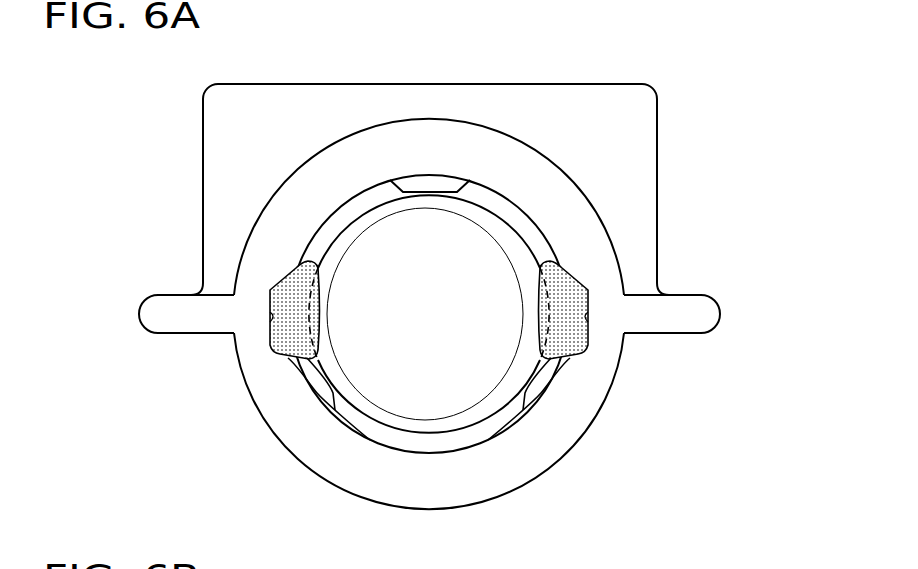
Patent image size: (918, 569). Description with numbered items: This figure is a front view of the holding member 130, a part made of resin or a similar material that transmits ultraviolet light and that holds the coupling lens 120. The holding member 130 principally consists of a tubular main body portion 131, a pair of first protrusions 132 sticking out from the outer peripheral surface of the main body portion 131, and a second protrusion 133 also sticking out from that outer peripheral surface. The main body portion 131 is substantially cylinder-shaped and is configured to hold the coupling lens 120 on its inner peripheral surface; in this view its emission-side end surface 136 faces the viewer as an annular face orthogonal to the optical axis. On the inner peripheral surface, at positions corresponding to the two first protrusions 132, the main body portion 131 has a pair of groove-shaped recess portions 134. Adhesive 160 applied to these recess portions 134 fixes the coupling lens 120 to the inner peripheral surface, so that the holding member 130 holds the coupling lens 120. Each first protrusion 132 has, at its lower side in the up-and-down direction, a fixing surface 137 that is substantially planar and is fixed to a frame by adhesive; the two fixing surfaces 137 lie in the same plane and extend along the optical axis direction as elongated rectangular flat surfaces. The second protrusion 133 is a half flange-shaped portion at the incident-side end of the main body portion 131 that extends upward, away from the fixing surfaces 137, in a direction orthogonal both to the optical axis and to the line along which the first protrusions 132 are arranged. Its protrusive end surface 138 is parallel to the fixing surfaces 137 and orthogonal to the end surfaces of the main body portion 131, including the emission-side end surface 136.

The coupling lens 120 is at (451, 437).
The holding member 130 is at (690, 70).
The main body portion 131 is at (582, 186).
The first protrusions 132 is at (163, 308).
The second protrusion 133 is at (268, 98).
The recess portions 134 is at (273, 349).
The emission-side end surface 136 is at (291, 208).
The fixing surface 137 is at (185, 337).
The protrusive end surface 138 is at (349, 84).
The adhesive 160 is at (291, 289).